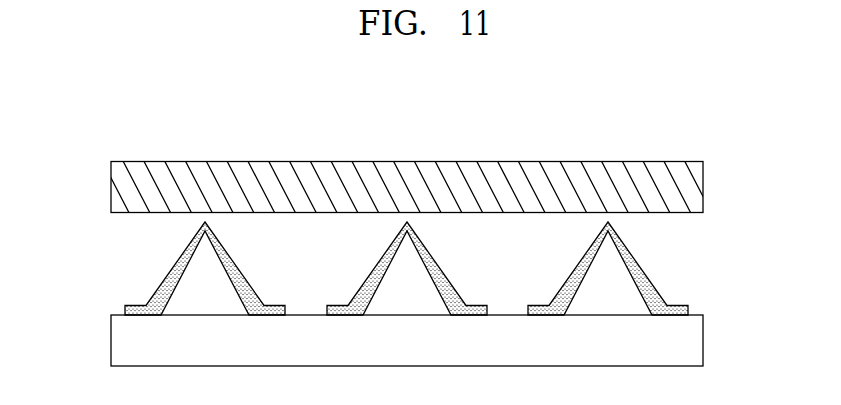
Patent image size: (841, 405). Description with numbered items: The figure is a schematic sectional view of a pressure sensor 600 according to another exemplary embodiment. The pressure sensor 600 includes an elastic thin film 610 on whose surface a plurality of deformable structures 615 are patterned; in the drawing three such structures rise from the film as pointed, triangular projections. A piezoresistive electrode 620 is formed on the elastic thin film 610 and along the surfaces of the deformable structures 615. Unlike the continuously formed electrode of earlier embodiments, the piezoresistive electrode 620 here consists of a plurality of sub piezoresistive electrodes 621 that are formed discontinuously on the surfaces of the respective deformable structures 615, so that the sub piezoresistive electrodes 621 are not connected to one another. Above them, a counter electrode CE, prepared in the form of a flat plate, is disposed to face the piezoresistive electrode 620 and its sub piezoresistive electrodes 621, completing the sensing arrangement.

The pressure sensor 600 is at (711, 125).
The counter electrode CE is at (698, 188).
The elastic thin film 610 is at (697, 343).
The deformable structures 615 is at (612, 270).
The piezoresistive electrode 620 is at (118, 303).
The sub piezoresistive electrodes 621 is at (572, 275).